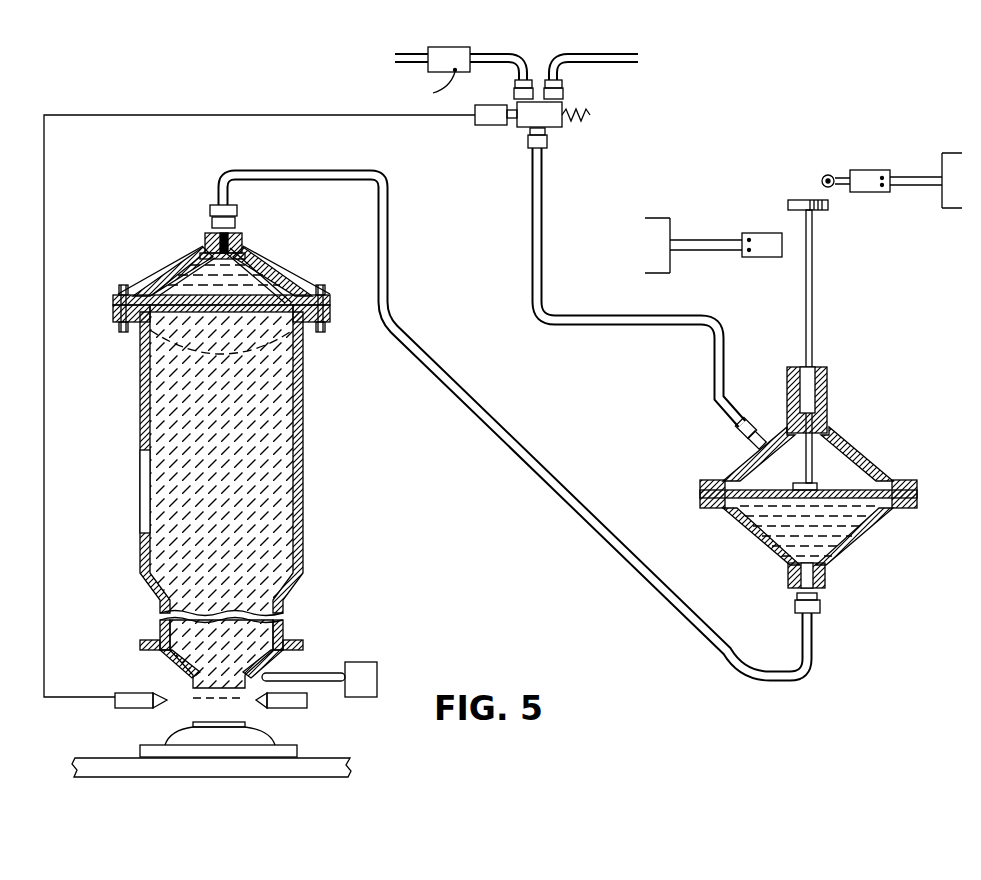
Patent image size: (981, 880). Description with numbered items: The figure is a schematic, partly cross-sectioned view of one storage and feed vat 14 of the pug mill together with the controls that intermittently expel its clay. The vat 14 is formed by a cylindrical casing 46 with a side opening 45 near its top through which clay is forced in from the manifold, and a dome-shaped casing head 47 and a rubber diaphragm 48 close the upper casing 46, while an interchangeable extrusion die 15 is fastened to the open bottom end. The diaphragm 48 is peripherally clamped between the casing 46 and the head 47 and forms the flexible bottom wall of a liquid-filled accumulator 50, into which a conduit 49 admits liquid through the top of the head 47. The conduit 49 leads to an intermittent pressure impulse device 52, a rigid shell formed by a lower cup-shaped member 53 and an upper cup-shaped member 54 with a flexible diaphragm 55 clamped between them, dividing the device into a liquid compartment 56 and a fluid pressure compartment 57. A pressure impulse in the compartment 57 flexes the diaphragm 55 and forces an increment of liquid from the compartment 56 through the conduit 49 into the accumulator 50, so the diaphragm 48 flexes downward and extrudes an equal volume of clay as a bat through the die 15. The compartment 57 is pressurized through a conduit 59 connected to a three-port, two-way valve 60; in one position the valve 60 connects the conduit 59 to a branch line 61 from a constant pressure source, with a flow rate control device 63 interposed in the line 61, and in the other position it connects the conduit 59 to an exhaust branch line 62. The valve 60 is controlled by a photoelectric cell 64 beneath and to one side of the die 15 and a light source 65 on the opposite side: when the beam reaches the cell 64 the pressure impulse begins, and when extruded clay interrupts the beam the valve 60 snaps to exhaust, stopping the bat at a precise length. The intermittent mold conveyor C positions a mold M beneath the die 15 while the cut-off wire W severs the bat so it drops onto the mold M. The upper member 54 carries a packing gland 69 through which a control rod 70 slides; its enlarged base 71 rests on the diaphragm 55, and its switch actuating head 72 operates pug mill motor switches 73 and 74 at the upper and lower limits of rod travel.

The cylindrical storage and feed vat 14 is at (231, 449).
The die 15 is at (170, 660).
The side opening 45 is at (145, 463).
The cylindrical casing 46 is at (140, 395).
The dome-shaped casing head 47 is at (205, 245).
The diaphragm 48 is at (255, 300).
The conduit 49 is at (392, 250).
The accumulator 50 is at (185, 265).
The intermittent pressure impulse device 52 is at (793, 482).
The lower cup-shaped member 53 is at (860, 545).
The upper cup-shaped member 54 is at (880, 466).
The flexible diaphragm 55 is at (700, 494).
The liquid compartment 56 is at (782, 530).
The fluid pressure compartment 57 is at (760, 470).
The conduit 59 is at (625, 326).
The three-port two-way valve 60 is at (565, 128).
The branch line 61 is at (490, 53).
The branch line 62 is at (598, 53).
The flow rate control device 63 is at (458, 47).
The photoelectric cell 64 is at (133, 710).
The light source 65 is at (290, 708).
The packing gland 69 is at (827, 385).
The control rod 70 is at (813, 295).
The enlarged base 71 is at (812, 483).
The switch actuating head 72 is at (826, 210).
The pug mill motor switch 73 is at (878, 170).
The pug mill motor switch 74 is at (780, 257).
The cut-off wire W is at (268, 678).
The mold M is at (275, 740).
The intermittent mold conveyor C is at (350, 765).